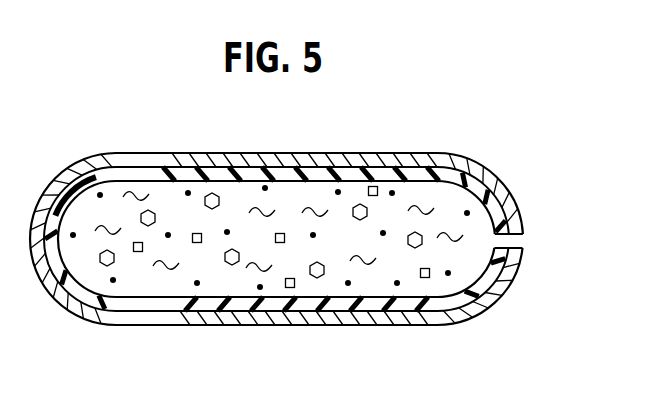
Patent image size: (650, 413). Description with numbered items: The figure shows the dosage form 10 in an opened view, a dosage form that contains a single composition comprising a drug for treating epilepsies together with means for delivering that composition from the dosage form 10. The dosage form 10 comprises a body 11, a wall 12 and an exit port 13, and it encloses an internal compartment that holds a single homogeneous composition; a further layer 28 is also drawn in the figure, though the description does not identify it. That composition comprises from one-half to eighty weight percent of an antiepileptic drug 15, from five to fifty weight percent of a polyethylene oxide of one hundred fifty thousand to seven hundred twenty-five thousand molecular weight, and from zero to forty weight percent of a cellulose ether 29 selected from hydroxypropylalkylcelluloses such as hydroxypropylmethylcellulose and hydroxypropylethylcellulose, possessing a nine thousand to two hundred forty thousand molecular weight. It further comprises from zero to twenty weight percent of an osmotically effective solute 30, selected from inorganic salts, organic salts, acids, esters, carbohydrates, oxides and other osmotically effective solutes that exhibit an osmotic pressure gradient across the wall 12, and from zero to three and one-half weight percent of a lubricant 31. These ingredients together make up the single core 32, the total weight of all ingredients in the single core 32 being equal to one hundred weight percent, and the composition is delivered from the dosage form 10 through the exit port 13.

The dosage form 10 is at (432, 136).
The body 11 is at (328, 153).
The wall 12 is at (273, 161).
The exit port 13 is at (518, 240).
The antiepileptic drug 15 is at (468, 211).
The inner layer 28 is at (235, 170).
The cellulose ether 29 is at (133, 190).
The osmotically effective solute 30 is at (210, 192).
The lubricant 31 is at (374, 186).
The single core 32 is at (75, 215).